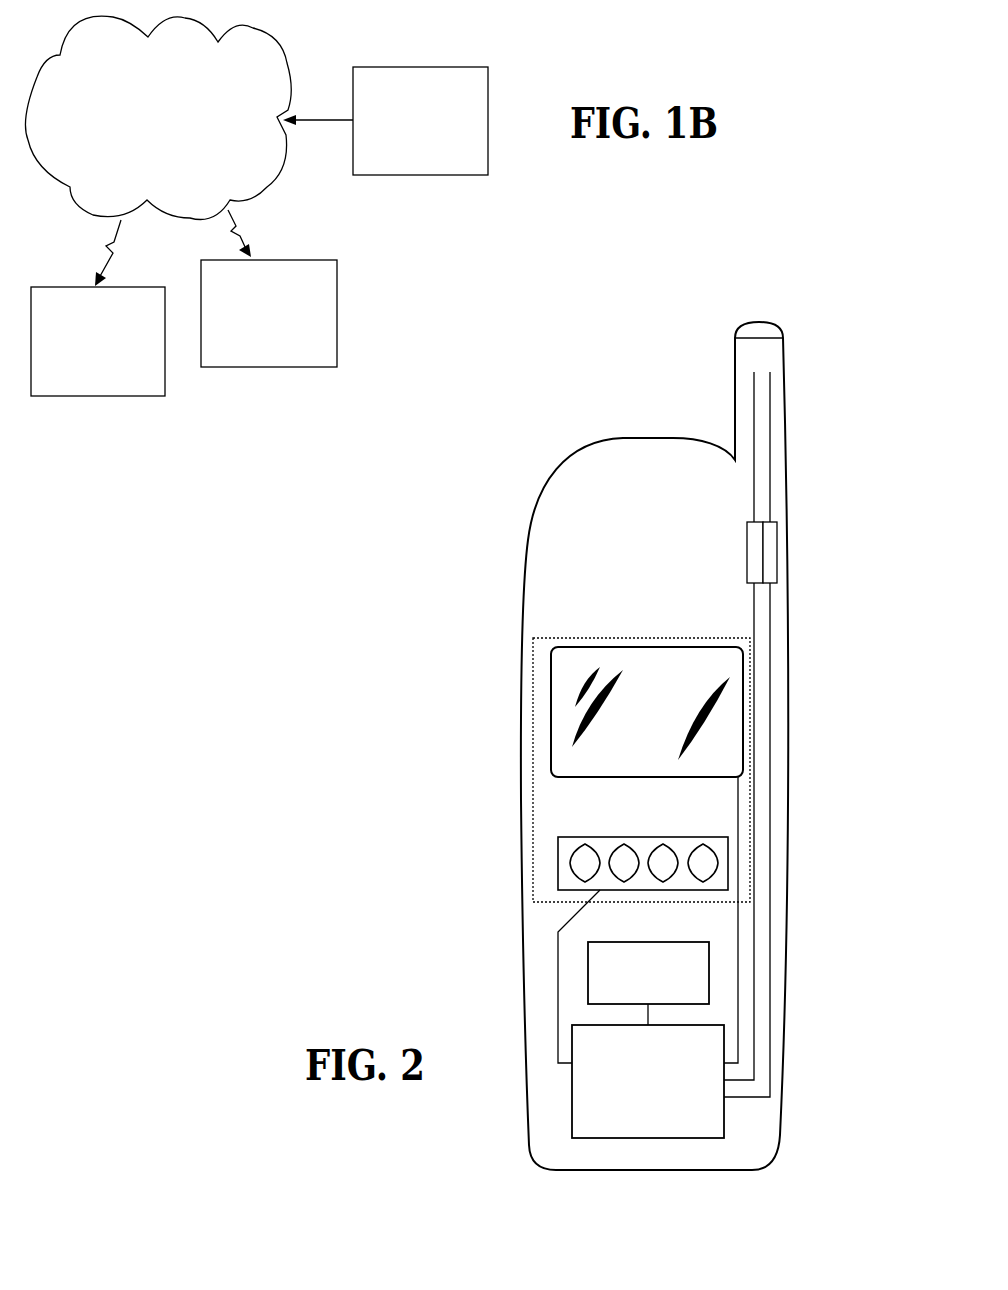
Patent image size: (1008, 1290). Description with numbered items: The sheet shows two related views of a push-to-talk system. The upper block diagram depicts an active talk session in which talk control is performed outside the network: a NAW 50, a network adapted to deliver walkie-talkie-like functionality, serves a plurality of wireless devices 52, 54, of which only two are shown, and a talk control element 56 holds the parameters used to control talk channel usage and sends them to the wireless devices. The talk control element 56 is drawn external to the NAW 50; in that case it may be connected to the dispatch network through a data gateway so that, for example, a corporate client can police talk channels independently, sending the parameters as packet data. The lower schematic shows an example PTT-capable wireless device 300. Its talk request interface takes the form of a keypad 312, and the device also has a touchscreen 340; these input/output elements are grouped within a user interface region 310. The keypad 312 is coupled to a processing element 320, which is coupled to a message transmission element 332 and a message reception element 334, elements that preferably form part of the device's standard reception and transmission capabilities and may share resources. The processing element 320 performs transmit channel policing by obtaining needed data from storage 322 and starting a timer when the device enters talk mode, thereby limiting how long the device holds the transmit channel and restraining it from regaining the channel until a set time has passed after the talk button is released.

In FIG. 1B, the NAW (network adapted to deliver walkie-talkie like functionality) 50 is at (148, 183).
In FIG. 1B, the wireless device 52 is at (86, 377).
In FIG. 1B, the wireless device 54 is at (257, 347).
In FIG. 1B, the talk control element 56 is at (432, 165).
In FIG. 2, the wireless device 300 is at (552, 414).
In FIG. 2, the user interface 310 is at (565, 630).
In FIG. 2, the keypad 312 is at (558, 852).
In FIG. 2, the processing element 320 is at (631, 1115).
In FIG. 2, the storage 322 is at (631, 998).
In FIG. 2, the message transmission element 332 is at (753, 568).
In FIG. 2, the message reception element 334 is at (770, 533).
In FIG. 2, the touchscreen 340 is at (559, 756).